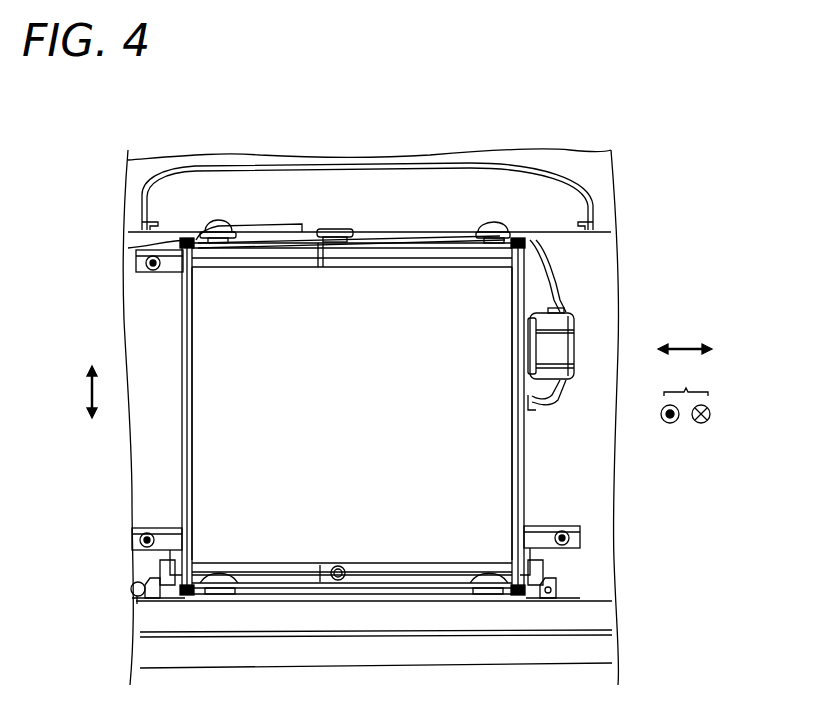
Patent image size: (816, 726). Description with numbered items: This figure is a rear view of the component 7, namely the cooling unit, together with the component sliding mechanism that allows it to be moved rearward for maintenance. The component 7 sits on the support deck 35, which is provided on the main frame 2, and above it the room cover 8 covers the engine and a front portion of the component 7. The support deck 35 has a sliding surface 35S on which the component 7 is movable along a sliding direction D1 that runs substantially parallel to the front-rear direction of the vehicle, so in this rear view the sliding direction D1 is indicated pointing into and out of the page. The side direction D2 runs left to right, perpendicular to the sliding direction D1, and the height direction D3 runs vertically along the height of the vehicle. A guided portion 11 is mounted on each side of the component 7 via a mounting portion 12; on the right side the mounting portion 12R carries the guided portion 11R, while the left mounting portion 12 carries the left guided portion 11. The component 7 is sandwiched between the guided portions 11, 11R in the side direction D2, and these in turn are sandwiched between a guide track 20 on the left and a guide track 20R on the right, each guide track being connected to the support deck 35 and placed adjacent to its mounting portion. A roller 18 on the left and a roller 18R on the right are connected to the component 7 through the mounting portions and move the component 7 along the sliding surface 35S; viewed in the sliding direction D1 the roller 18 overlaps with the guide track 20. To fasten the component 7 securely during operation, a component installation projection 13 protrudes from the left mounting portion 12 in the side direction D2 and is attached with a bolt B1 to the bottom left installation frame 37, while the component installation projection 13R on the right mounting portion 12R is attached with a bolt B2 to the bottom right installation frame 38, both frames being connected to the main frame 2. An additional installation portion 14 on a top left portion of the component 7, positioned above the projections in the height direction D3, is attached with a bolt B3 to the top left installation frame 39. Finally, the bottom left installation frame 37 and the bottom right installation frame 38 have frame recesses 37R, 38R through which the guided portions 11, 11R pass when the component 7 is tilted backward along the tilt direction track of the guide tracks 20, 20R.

The main frame 2 is at (357, 655).
The component 7 is at (580, 356).
The room cover 8 is at (582, 155).
The guided portion 11 is at (162, 566).
The guided portion 11R is at (562, 574).
The mounting portion 12 is at (176, 527).
The mounting portion 12R is at (575, 525).
The component installation projection 13 is at (170, 534).
The component installation projection 13R is at (566, 531).
The additional installation portion 14 is at (135, 240).
The roller 18 is at (166, 590).
The roller 18R is at (568, 590).
The guide track 20 is at (166, 545).
The guide track 20R is at (570, 552).
The support deck 35 is at (571, 600).
The sliding surface 35S is at (134, 592).
The bottom left installation frame 37 is at (154, 600).
The frame recess 37R is at (198, 600).
The bottom right installation frame 38 is at (563, 600).
The frame recess 38R is at (517, 600).
The top left installation frame 39 is at (130, 265).
The bolt B1 is at (140, 540).
The bolt B2 is at (572, 538).
The bolt B3 is at (144, 262).
The sliding direction D1 is at (685, 392).
The side direction D2 is at (686, 346).
The height direction D3 is at (90, 390).